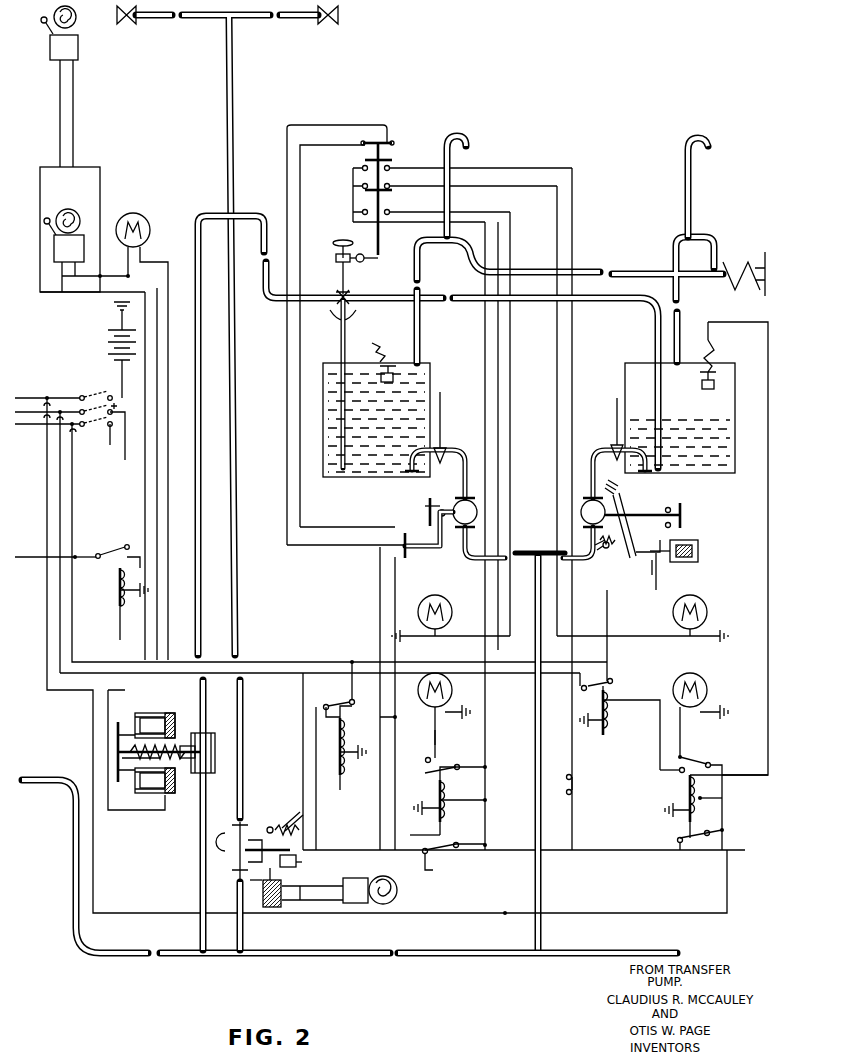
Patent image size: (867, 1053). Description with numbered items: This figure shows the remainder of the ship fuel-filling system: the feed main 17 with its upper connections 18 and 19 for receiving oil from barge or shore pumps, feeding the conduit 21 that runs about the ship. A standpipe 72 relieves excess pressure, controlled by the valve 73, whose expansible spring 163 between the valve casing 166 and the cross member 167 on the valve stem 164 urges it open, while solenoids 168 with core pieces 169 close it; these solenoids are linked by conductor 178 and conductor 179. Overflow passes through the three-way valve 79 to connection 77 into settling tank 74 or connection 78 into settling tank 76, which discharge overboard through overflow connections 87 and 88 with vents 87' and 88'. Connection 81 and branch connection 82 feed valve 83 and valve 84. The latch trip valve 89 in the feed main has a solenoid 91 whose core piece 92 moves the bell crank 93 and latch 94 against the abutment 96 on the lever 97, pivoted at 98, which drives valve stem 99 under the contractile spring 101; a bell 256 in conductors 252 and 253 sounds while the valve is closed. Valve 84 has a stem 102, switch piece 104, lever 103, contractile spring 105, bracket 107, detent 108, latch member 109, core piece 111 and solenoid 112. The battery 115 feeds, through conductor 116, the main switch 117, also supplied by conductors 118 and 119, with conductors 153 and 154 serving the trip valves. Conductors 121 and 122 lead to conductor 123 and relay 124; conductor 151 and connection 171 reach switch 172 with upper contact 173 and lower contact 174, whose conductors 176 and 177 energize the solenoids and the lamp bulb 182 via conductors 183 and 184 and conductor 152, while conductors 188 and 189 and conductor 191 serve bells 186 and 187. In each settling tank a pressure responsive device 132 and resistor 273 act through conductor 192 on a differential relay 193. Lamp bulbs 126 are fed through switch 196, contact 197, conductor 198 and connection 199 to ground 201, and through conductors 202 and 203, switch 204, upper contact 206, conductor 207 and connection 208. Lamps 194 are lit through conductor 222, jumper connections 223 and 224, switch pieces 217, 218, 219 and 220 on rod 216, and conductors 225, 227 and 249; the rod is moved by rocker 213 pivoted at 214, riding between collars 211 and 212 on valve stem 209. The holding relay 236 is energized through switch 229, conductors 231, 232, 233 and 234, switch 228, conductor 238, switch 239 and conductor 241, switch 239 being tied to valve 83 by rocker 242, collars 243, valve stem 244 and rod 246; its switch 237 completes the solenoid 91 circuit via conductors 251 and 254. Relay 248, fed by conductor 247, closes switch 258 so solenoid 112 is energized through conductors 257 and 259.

The feed main 17 is at (222, 99).
The connection 18 is at (160, 20).
The connection 19 is at (310, 20).
The bell 187 is at (80, 55).
The conductor 191 is at (100, 188).
The bell 186 is at (66, 209).
The lamp bulb 182 is at (148, 217).
The conductor 183 is at (128, 266).
The conductor 184 is at (148, 274).
The conductor 189 is at (60, 279).
The conductor 188 is at (100, 294).
The conductor 177 is at (169, 300).
The battery 115 is at (107, 342).
The conductor 116 is at (118, 378).
The main switch 117 is at (112, 394).
The conductor 122 is at (42, 393).
The conductor 121 is at (63, 394).
The conductor 153 is at (34, 432).
The conductor 154 is at (34, 452).
The conductor 118 is at (118, 436).
The conductor 119 is at (110, 457).
The conductor 151 is at (72, 485).
The conductor 152 is at (60, 508).
The conductor 123 is at (47, 580).
The switch 172 is at (113, 548).
The upper contact 173 is at (128, 544).
The connection 171 is at (88, 552).
The conductor 176 is at (133, 556).
The lower contact 174 is at (128, 590).
The relay 124 is at (118, 612).
The standpipe 72 is at (199, 450).
The conductor 231 is at (293, 452).
The conductor 238 is at (298, 478).
The switch piece 217 is at (392, 148).
The switch piece 219 is at (392, 160).
The jumper connection 224 is at (353, 172).
The jumper connection 223 is at (353, 196).
The switch piece 220 is at (353, 212).
The switch piece 218 is at (392, 191).
The rod 216 is at (381, 242).
The valve stem 209 is at (343, 242).
The pivot 214 is at (360, 254).
The collar 211 is at (335, 260).
The collar 212 is at (340, 290).
The rocker 213 is at (367, 264).
The three-way valve 79 is at (348, 314).
The connection 77 is at (338, 354).
The settling tank 74 is at (432, 387).
The resistor 273 is at (725, 345).
The pressure responsive device 132 is at (388, 366).
The overflow connection 87 is at (508, 301).
The vent 87' is at (478, 181).
The conductor 192 is at (489, 352).
The conductor 222 is at (503, 366).
The conductor 227 is at (514, 383).
The conductor 225 is at (556, 405).
The conductor 249 is at (571, 424).
The connection 78 is at (584, 304).
The settling tank 76 is at (625, 375).
The overflow connection 88 is at (688, 299).
The vent 88' is at (711, 187).
The valve 83 is at (478, 512).
The valve 84 is at (583, 514).
The valve stem 244 is at (428, 506).
The collars 243 is at (442, 509).
The rocker 242 is at (440, 540).
The rod 246 is at (412, 556).
The switch 239 is at (400, 547).
The branch connection 82 is at (558, 551).
The detent 108 is at (623, 512).
The stem 102 is at (668, 507).
The switch piece 104 is at (685, 516).
The solenoid 112 is at (698, 553).
The contractile spring 105 is at (606, 550).
The bracket 107 is at (598, 552).
The lever 103 is at (640, 560).
The core piece 111 is at (660, 562).
The latch member 109 is at (655, 575).
The lamp bulb 194 is at (447, 606).
The conductor 257 is at (630, 636).
The switch 258 is at (620, 680).
The conductor 259 is at (580, 690).
The lamp bulb 126 is at (450, 685).
The relay 248 is at (603, 738).
The conductor 247 is at (660, 714).
The upper contact 206 is at (684, 757).
The switch 204 is at (700, 757).
The conductor 207 is at (670, 771).
The differential relay 193 is at (438, 790).
The contact 197 is at (426, 757).
The conductor 198 is at (437, 746).
The switch 196 is at (445, 766).
The connection 199 is at (470, 800).
The connection 81 is at (565, 786).
The holding relay 236 is at (341, 769).
The switch 237 is at (345, 700).
The conductor 234 is at (362, 712).
The conductor 241 is at (393, 598).
The conductor 251 is at (303, 718).
The conductor 254 is at (316, 733).
The ground 201 is at (410, 833).
The conductor 232 is at (458, 843).
The switch 228 is at (427, 854).
The conductor 233 is at (433, 870).
The conduit 21 is at (70, 815).
The valve 73 is at (212, 745).
The solenoid 168 is at (162, 712).
The core piece 169 is at (128, 720).
The expansible spring 163 is at (175, 728).
The valve casing 166 is at (173, 782).
The conductor 178 is at (118, 742).
The cross member 167 is at (118, 752).
The valve stem 164 is at (122, 758).
The conductor 179 is at (140, 814).
The latch trip valve 89 is at (235, 834).
The pivot 98 is at (236, 865).
The bell crank 93 is at (265, 880).
The solenoid 91 is at (270, 908).
The valve stem 99 is at (276, 828).
The contractile spring 101 is at (298, 816).
The lever 97 is at (292, 848).
The latch 94 is at (296, 858).
The abutment 96 is at (304, 864).
The core piece 92 is at (276, 869).
The conductor 252 is at (310, 905).
The conductor 253 is at (292, 905).
The bell 256 is at (398, 894).
The conductor 202 is at (686, 916).
The connection 208 is at (724, 799).
The conductor 203 is at (725, 828).
The switch 229 is at (686, 850).